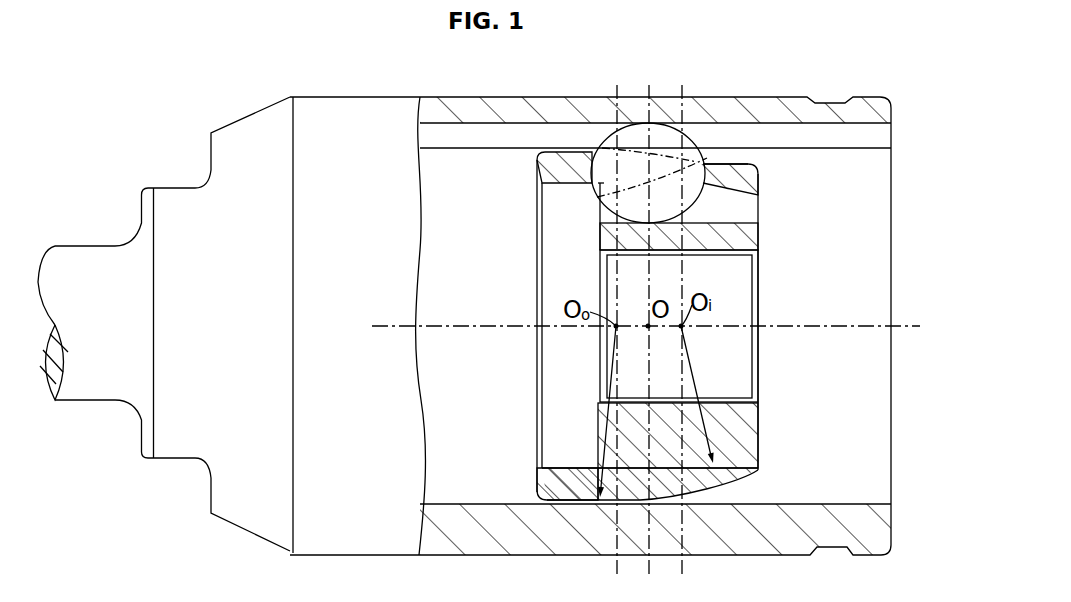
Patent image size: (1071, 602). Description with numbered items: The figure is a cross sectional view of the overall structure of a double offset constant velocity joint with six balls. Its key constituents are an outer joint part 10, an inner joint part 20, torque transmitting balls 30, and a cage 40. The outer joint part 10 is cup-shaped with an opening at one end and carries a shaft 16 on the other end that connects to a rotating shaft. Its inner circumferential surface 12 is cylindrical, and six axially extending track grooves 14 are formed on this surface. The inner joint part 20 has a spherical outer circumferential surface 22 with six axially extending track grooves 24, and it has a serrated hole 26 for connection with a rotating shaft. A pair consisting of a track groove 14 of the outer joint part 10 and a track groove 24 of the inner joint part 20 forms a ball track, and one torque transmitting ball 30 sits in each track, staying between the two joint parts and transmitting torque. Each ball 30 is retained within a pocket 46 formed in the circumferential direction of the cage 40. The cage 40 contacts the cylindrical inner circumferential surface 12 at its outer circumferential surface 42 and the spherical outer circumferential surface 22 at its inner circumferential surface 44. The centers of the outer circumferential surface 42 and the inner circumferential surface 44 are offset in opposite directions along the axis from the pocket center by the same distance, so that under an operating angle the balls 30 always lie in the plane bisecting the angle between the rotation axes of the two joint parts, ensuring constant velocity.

The outer joint part 10 is at (540, 108).
The inner circumferential surface 12 is at (858, 504).
The track groove 14 is at (459, 130).
The shaft 16 is at (83, 263).
The inner joint part 20 is at (730, 445).
The spherical outer circumferential surface 22 is at (760, 470).
The track groove 24 is at (730, 223).
The serrated hole 26 is at (740, 256).
The torque transmitting ball 30 is at (636, 137).
The cage 40 is at (687, 487).
The outer circumferential surface 42 is at (611, 503).
The inner circumferential surface 44 is at (643, 467).
The pocket 46 is at (708, 144).